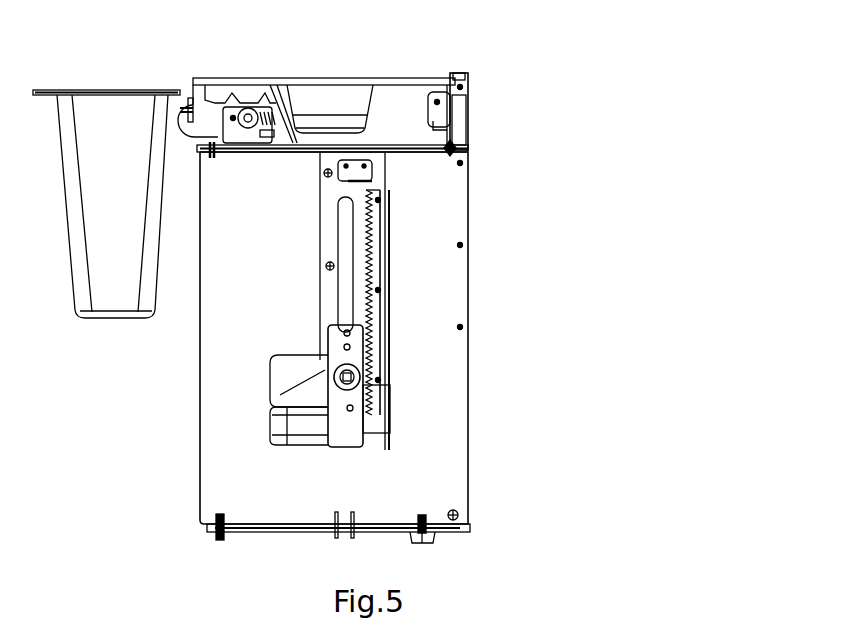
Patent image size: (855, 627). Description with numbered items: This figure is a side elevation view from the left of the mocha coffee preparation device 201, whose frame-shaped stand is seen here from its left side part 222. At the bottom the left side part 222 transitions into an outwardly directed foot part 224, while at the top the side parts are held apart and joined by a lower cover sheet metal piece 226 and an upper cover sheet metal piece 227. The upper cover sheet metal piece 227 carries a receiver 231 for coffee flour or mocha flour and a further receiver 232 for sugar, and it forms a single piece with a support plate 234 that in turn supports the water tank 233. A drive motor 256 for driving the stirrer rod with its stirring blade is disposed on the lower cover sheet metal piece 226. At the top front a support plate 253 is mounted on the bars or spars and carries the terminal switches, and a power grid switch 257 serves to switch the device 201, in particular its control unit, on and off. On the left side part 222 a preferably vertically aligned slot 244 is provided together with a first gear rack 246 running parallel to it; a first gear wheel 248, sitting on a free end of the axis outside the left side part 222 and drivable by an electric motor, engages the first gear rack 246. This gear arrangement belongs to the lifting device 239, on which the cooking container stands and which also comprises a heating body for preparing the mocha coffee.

The device 201 is at (334, 303).
The left side part 222 is at (220, 440).
The foot part 224 is at (252, 531).
The lower cover sheet metal piece 226 is at (403, 153).
The upper cover sheet metal piece 227 is at (400, 75).
The receiver for coffee flour 231 is at (230, 83).
The receiver for sugar 232 is at (323, 93).
The water tank 233 is at (131, 158).
The support plate 234 is at (98, 90).
The lifting device 239 is at (258, 395).
The slot 244 is at (345, 288).
The first gear rack 246 is at (383, 305).
The first gear wheel 248 is at (387, 388).
The support plate 253 is at (460, 142).
The drive motor 256 is at (182, 97).
The power grid switch 257 is at (468, 107).